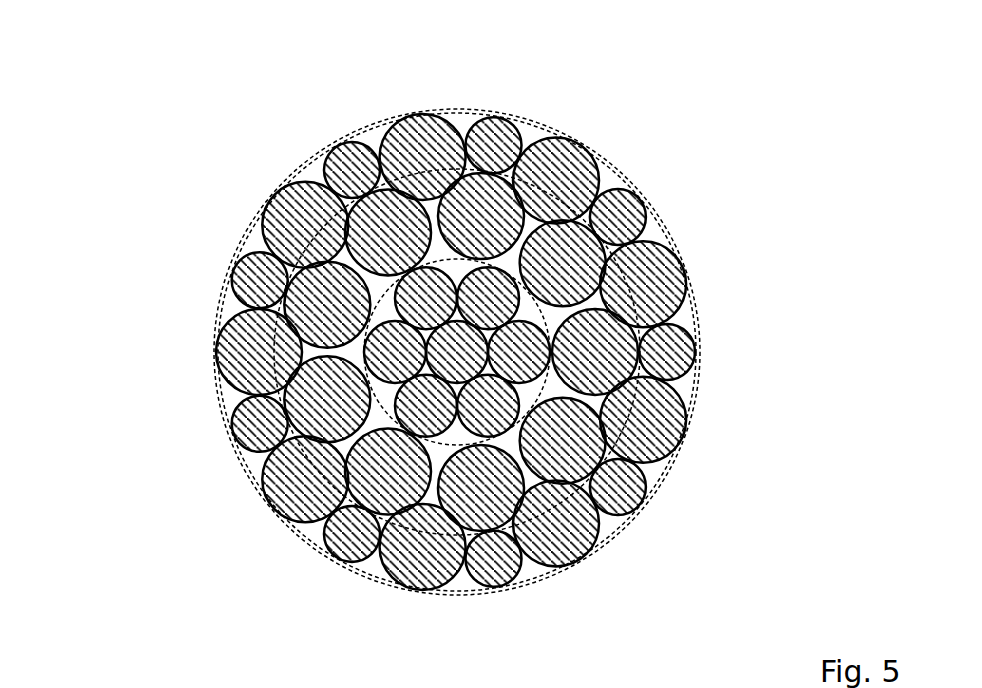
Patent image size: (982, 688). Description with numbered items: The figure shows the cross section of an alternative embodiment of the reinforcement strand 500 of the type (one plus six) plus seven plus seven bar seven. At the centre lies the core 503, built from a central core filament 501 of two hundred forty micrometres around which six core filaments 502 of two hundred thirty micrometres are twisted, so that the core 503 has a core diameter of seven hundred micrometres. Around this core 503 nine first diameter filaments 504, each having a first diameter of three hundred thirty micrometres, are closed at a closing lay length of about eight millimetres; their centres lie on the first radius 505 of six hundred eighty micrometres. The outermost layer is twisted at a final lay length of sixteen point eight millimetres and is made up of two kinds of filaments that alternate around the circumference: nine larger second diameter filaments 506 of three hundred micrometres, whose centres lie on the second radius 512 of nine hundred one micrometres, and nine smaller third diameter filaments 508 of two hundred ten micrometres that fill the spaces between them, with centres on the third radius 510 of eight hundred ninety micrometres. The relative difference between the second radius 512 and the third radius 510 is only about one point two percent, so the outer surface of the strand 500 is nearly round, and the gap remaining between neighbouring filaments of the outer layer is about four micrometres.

The reinforcement strand 500 is at (175, 130).
The core filament 501 is at (468, 345).
The core filaments 502 is at (522, 352).
The core 503 is at (547, 383).
The first diameter filaments 504 is at (577, 452).
The first radius 505 is at (317, 517).
The second diameter filaments 506 is at (243, 360).
The third diameter filaments 508 is at (263, 413).
The third radius 510 is at (338, 145).
The second radius 512 is at (413, 115).